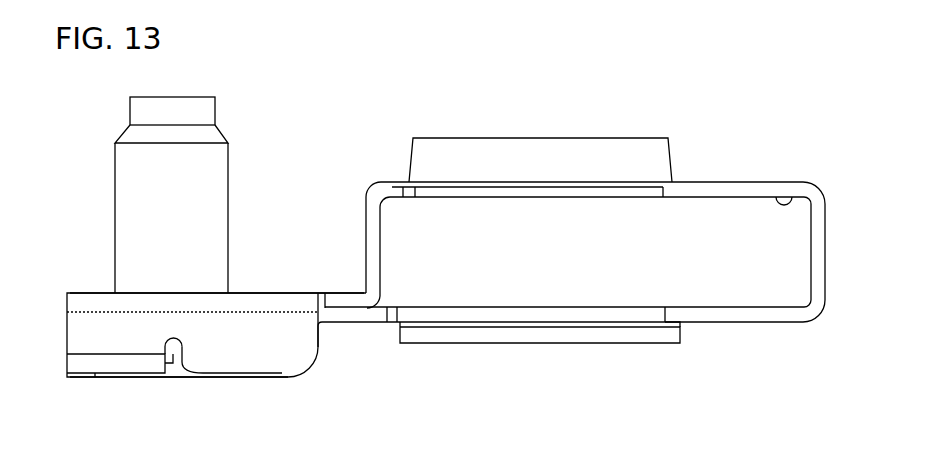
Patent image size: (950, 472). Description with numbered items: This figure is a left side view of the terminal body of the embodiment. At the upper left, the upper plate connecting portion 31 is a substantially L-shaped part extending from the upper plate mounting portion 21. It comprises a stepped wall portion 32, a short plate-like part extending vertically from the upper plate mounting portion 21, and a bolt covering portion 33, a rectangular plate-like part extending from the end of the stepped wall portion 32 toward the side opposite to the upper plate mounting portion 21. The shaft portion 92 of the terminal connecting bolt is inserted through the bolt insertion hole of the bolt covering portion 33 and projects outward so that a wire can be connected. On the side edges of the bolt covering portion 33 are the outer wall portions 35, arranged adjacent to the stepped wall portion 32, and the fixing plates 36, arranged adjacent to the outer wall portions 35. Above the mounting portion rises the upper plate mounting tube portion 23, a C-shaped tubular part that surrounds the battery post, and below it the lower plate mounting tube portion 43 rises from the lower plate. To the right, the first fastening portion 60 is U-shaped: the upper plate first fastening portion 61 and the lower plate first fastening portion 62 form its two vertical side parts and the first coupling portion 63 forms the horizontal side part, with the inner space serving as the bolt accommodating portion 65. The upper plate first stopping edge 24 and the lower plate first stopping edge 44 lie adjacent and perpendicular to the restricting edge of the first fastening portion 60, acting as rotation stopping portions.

The upper plate mounting portion 21 is at (605, 192).
The upper plate mounting tube portion 23 is at (524, 155).
The upper plate first stopping edge 24 is at (663, 192).
The upper plate connecting portion 31 is at (85, 255).
The stepped wall portion 32 is at (372, 230).
The bolt covering portion 33 is at (277, 302).
The outer wall portion 35 is at (242, 360).
The fixing plate 36 is at (112, 342).
The lower plate mounting tube portion 43 is at (525, 335).
The lower plate first stopping edge 44 is at (666, 313).
The first fastening portion 60 is at (808, 357).
The upper plate first fastening portion 61 is at (745, 190).
The lower plate first fastening portion 62 is at (743, 312).
The first coupling portion 63 is at (824, 260).
The bolt accommodating portion 65 is at (790, 200).
The shaft portion 92 is at (133, 163).